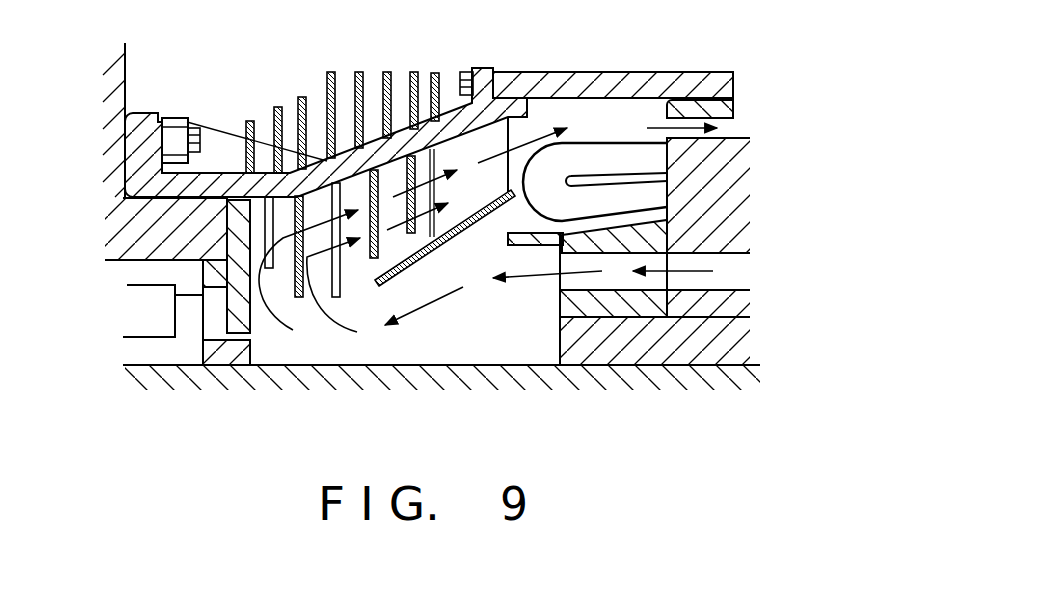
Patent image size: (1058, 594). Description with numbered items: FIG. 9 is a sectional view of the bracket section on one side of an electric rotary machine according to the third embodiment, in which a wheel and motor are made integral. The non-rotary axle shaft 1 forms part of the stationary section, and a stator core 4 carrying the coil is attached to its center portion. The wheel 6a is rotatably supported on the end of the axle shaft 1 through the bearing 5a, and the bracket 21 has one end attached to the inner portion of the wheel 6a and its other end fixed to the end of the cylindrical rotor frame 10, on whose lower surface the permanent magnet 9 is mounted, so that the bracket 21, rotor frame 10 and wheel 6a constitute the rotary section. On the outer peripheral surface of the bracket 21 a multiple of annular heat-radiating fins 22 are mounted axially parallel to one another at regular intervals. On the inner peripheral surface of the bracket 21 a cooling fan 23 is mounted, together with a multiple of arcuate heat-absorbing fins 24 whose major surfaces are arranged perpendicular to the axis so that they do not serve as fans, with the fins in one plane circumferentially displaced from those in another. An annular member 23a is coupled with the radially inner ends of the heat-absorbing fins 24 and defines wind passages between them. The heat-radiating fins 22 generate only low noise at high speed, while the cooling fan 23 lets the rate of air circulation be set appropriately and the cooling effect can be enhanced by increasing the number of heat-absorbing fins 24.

The axle shaft 1 is at (625, 375).
The stator core 4 is at (735, 212).
The bearing 5a is at (148, 303).
The wheel 6a is at (85, 100).
The permanent magnet 9 is at (706, 100).
The rotor frame 10 is at (623, 72).
The bracket 21 is at (213, 163).
The heat-radiating fins 22 is at (363, 72).
The cooling fan 23 is at (462, 205).
The annular member 23a is at (433, 237).
The heat-absorbing fins 24 is at (343, 263).